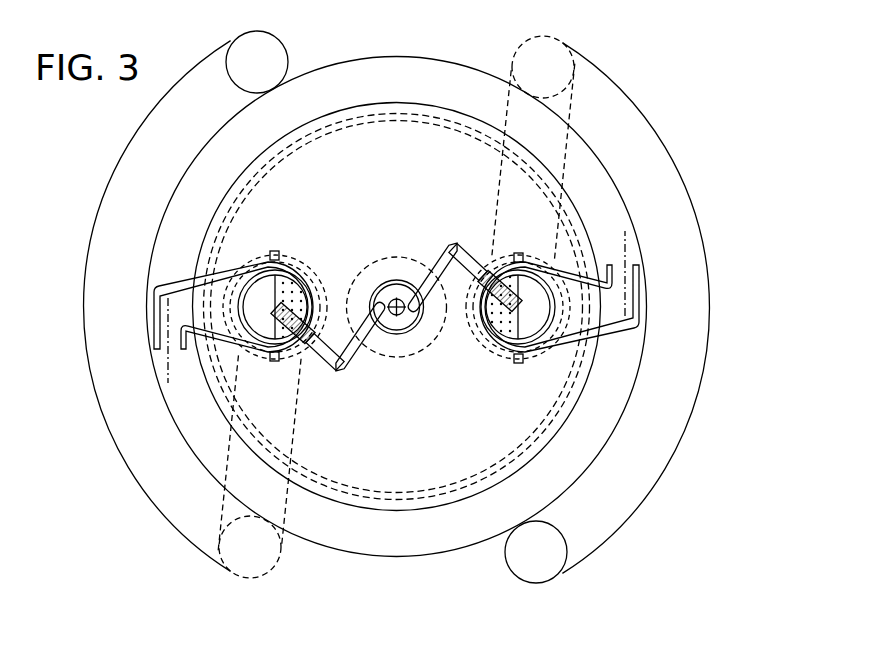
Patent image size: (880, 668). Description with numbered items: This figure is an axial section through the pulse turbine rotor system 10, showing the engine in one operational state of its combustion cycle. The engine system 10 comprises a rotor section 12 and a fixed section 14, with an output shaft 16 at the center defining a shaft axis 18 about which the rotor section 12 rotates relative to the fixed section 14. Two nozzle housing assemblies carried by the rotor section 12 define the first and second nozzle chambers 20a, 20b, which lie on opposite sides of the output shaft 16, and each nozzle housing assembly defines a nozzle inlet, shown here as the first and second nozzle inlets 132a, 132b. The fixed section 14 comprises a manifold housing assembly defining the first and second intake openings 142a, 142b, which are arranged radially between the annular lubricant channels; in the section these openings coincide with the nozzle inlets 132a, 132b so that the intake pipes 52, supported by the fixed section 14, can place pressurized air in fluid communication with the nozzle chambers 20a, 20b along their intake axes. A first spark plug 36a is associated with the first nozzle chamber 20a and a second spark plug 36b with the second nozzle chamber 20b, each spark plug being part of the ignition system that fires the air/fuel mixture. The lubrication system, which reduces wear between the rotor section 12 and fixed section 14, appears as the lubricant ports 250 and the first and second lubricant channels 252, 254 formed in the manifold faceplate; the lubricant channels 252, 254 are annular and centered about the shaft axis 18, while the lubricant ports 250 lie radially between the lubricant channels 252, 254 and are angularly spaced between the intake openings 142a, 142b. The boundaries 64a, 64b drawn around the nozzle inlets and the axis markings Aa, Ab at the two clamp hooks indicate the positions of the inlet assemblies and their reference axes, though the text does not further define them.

The pulse turbine rotor system 10 is at (105, 128).
The rotor section 12 is at (413, 110).
The fixed section 14 is at (403, 68).
The output shaft 16 is at (405, 318).
The shaft axis 18 is at (390, 322).
The first nozzle chamber 20a is at (210, 320).
The second nozzle chamber 20b is at (612, 320).
The first spark plug 36a is at (322, 370).
The second spark plug 36b is at (470, 252).
The intake pipes 52 is at (97, 205).
The first bolt boundary 64a is at (310, 251).
The second bolt boundary 64b is at (480, 367).
The first nozzle inlet 132a is at (307, 282).
The first intake opening 142a is at (275, 252).
The second nozzle inlet 132b is at (487, 344).
The second intake opening 142b is at (543, 330).
The lubricant ports 250 is at (466, 207).
The first lubricant channel 252 is at (410, 262).
The second lubricant channel 254 is at (397, 122).
The first axis Aa is at (168, 363).
The second axis Ab is at (622, 252).